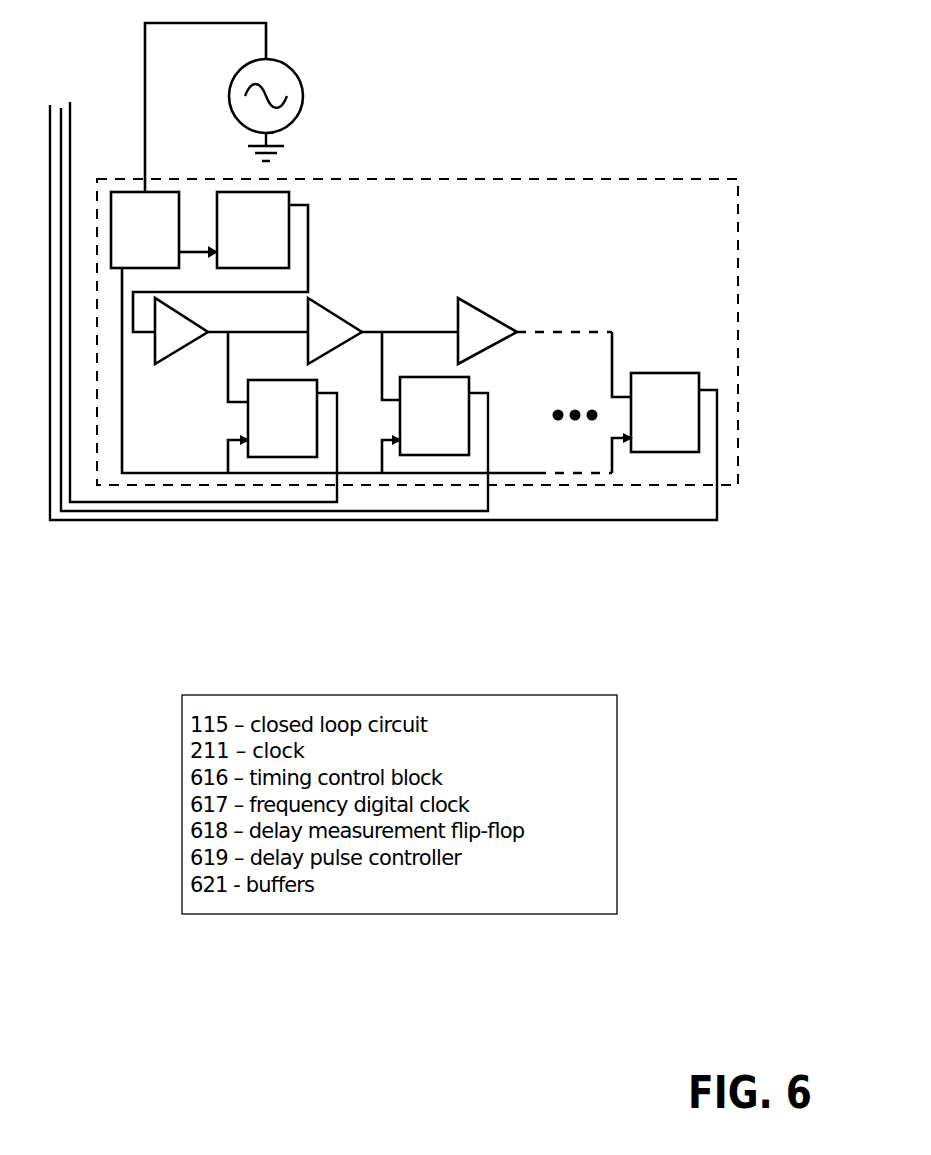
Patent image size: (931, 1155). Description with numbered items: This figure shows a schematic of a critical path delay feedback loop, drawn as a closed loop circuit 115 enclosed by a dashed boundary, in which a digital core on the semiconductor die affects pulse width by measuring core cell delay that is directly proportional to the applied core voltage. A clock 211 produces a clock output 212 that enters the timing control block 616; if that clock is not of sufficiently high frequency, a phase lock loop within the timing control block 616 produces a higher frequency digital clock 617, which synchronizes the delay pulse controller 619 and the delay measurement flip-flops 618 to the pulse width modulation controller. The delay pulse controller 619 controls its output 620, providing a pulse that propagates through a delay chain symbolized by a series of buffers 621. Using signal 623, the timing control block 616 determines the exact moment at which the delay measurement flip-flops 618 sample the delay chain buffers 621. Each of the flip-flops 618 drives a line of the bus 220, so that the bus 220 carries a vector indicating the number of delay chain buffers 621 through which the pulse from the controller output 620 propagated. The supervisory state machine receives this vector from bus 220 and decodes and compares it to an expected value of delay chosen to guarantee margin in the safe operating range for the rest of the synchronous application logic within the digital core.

The closed loop circuit 115 is at (322, 178).
The clock 211 is at (243, 66).
The clock output 212 is at (271, 47).
The bus 220 is at (50, 138).
The timing control block 616 is at (130, 239).
The digital clock 617 is at (183, 258).
The delay measurement flip-flops 618 is at (267, 426).
The delay pulse controller 619 is at (238, 239).
The output 620 is at (311, 244).
The buffers 621 is at (207, 318).
The signal 623 is at (128, 409).